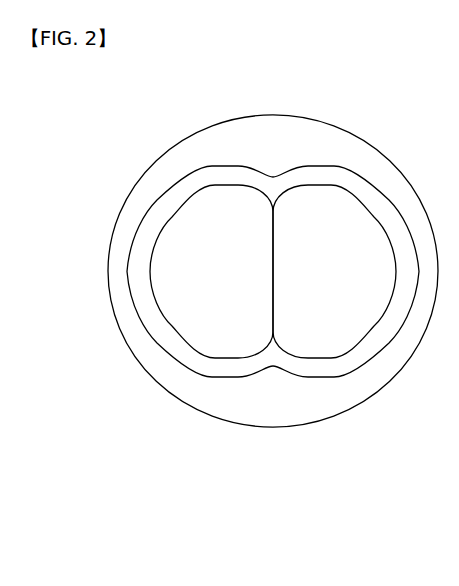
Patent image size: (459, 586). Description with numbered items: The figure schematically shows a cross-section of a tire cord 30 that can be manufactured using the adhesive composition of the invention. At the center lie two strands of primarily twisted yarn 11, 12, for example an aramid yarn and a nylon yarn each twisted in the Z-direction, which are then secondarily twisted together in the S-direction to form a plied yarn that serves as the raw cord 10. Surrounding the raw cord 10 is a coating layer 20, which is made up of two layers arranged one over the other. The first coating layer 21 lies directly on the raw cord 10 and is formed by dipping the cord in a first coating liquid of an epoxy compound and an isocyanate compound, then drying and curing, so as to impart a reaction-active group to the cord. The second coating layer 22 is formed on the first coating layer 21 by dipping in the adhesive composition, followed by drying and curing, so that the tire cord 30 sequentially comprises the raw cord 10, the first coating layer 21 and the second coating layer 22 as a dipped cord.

The raw cord 10 is at (273, 347).
The primarily twisted yarn 11 is at (232, 306).
The primarily twisted yarn 12 is at (317, 306).
The coating layer 20 is at (273, 311).
The first coating layer 21 is at (192, 363).
The second coating layer 22 is at (222, 397).
The tire cord 30 is at (273, 330).